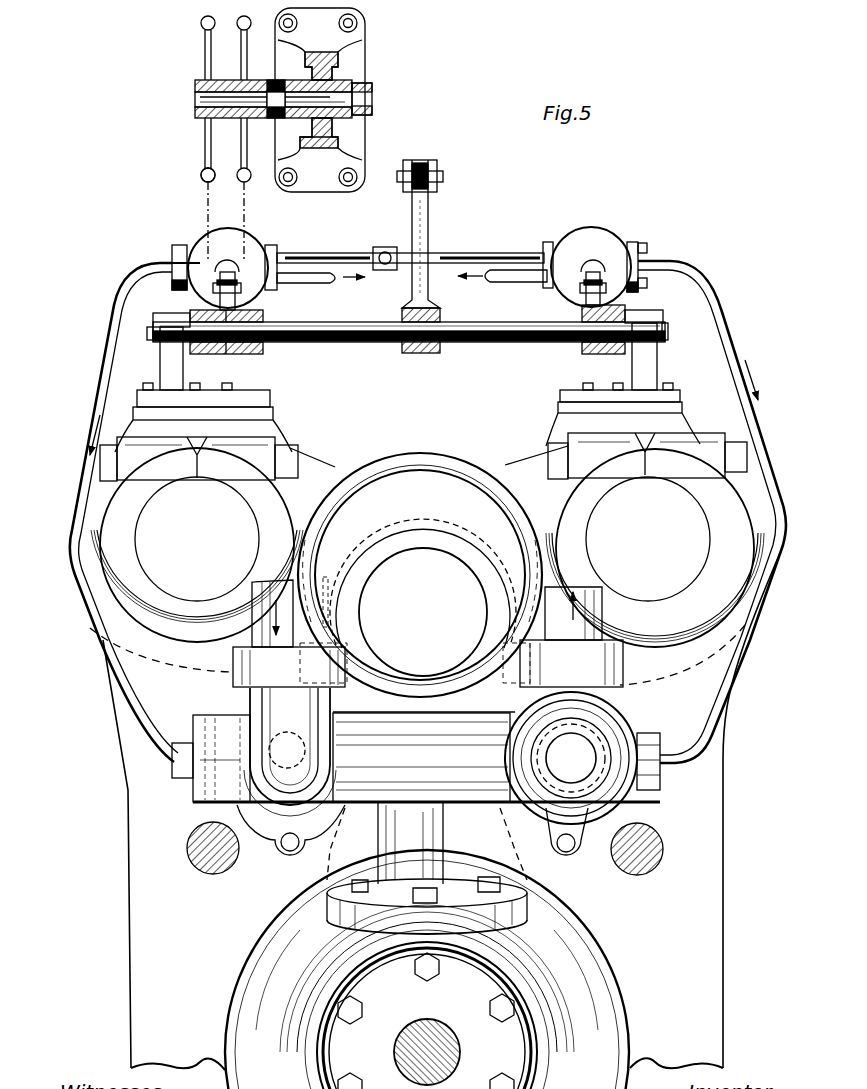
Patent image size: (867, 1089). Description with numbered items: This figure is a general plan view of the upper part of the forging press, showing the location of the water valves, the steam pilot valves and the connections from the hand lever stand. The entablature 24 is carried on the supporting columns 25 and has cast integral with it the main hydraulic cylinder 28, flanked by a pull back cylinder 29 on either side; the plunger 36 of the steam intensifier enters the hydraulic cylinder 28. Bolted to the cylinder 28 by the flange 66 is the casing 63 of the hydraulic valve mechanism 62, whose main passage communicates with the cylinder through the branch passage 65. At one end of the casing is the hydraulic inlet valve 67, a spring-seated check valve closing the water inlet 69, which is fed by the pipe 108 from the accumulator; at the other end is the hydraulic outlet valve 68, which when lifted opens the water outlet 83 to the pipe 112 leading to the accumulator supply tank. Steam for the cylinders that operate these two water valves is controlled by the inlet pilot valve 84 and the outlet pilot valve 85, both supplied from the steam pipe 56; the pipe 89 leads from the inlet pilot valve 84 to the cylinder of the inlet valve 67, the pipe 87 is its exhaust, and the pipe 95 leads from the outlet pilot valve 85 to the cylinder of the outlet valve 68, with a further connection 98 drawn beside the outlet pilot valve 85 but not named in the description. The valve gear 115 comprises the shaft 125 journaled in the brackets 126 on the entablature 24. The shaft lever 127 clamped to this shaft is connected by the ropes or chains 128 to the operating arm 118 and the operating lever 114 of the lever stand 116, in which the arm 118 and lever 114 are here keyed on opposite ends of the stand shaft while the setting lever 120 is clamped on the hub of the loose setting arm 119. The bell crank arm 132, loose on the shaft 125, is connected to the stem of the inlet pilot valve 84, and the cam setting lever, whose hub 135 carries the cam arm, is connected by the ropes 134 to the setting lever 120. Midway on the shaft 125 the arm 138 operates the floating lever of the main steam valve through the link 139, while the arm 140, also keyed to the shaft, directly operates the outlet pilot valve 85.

The entablature 24 is at (425, 874).
The supporting columns 25 is at (427, 540).
The main hydraulic cylinder 28 is at (427, 969).
The pull back cylinder 29 is at (420, 575).
The piston rod or plunger 36 is at (410, 1052).
The steam pipe 56 is at (385, 251).
The hydraulic valve mechanism 62 is at (455, 721).
The casing 63 is at (426, 757).
The branch passage 65 is at (427, 843).
The flange 66 is at (427, 905).
The hydraulic inlet valve 67 is at (290, 752).
The hydraulic outlet valve 68 is at (571, 758).
The water inlet 69 is at (228, 700).
The water outlet 83 is at (612, 690).
The inlet pilot valve 84 is at (228, 262).
The outlet pilot valve 85 is at (592, 240).
The exhaust outlet or pipe 87 is at (296, 284).
The pipe 89 is at (118, 343).
The pipe 95 is at (722, 314).
The push rod 98 is at (533, 283).
The pipe 108 is at (262, 608).
The pipe 112 is at (602, 612).
The operating lever 114 is at (372, 92).
The valve gear 115 is at (409, 343).
The lever stand 116 is at (330, 76).
The operating arm 118 is at (205, 133).
The setting arm 119 is at (247, 145).
The setting lever 120 is at (268, 82).
The shaft 125 is at (386, 346).
The brackets 126 is at (166, 359).
The shaft lever 127 is at (185, 304).
The ropes or chains 128 is at (206, 192).
The bell crank arm 132 is at (222, 292).
The ropes 134 is at (248, 222).
The hub 135 is at (266, 352).
The arm 138 is at (428, 242).
The link 139 is at (425, 172).
The arm 140 is at (598, 270).